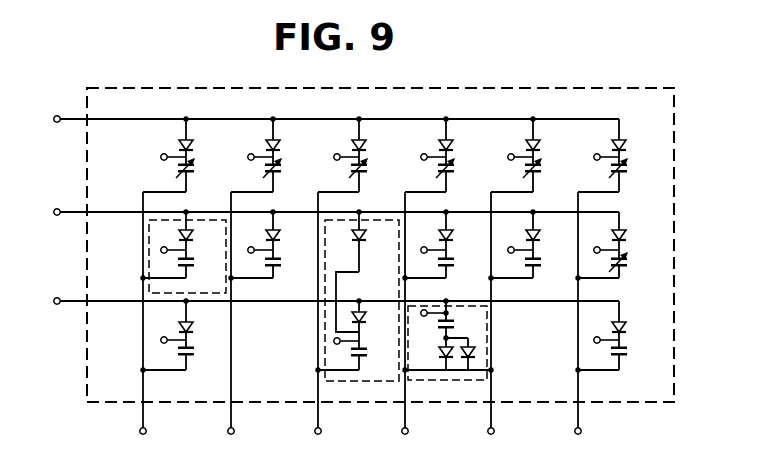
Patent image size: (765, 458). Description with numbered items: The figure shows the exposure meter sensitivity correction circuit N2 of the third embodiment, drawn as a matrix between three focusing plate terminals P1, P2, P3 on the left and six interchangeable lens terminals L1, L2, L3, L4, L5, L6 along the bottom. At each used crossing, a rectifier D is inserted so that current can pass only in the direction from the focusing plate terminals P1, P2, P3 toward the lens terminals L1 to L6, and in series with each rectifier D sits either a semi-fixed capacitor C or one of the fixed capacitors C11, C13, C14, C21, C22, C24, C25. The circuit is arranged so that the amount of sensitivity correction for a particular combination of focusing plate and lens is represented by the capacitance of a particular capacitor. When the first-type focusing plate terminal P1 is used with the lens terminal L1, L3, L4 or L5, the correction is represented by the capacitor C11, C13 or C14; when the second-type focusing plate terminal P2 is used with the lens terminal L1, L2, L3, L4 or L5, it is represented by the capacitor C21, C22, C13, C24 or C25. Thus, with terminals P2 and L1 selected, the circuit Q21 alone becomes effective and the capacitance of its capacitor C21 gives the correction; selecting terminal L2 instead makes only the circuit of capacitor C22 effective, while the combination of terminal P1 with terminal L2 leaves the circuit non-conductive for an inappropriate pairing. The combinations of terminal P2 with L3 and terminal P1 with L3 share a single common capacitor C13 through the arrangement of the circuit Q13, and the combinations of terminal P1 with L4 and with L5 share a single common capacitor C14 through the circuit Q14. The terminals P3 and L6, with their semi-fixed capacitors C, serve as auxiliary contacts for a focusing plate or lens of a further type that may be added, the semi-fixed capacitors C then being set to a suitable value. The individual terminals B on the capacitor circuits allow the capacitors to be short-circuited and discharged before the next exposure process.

The exposure meter sensitivity correction circuit N2 is at (445, 88).
The focusing plate terminal P1 is at (319, 303).
The focusing plate terminal P2 is at (319, 214).
The focusing plate terminal P3 is at (319, 122).
The interchangeable lens terminal L1 is at (159, 322).
The interchangeable lens terminal L2 is at (247, 322).
The interchangeable lens terminal L3 is at (334, 324).
The interchangeable lens terminal L4 is at (421, 324).
The interchangeable lens terminal L5 is at (507, 322).
The interchangeable lens terminal L6 is at (594, 322).
The rectifier D is at (412, 246).
The individual terminal B is at (379, 253).
The semi-fixed capacitor C is at (410, 260).
The fixed capacitor C11 is at (201, 365).
The fixed capacitor C13 is at (374, 366).
The fixed capacitor C14 is at (463, 330).
The fixed capacitor C21 is at (201, 273).
The fixed capacitor C22 is at (288, 273).
The fixed capacitor C24 is at (461, 273).
The fixed capacitor C25 is at (548, 273).
The circuit Q21 is at (143, 266).
The circuit Q13 is at (345, 381).
The circuit Q14 is at (430, 380).